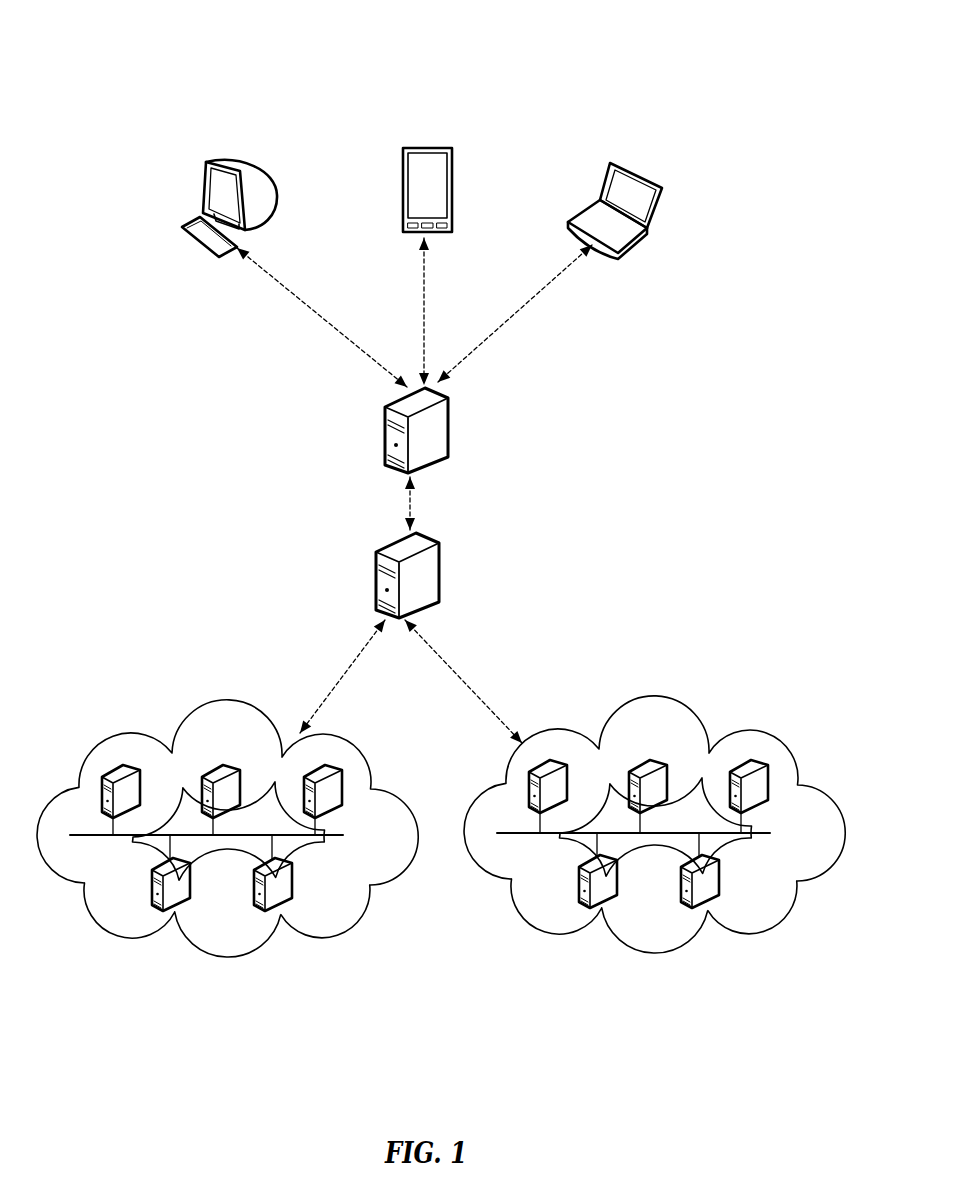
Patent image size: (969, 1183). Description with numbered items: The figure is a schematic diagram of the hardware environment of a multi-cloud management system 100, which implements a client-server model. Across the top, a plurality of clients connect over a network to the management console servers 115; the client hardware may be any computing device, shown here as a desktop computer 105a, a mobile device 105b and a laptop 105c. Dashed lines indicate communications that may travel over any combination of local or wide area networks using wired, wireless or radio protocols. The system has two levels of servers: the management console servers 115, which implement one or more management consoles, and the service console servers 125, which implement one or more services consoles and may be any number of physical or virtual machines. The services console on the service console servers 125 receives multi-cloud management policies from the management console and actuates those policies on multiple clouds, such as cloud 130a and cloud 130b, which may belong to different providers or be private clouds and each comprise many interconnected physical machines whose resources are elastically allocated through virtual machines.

The multi-cloud management system 100 is at (845, 41).
The desktop computer 105a is at (250, 143).
The mobile device 105b is at (450, 141).
The laptop 105c is at (645, 145).
The management console servers 115 is at (652, 418).
The service console servers 125 is at (640, 553).
The cloud 130a is at (382, 1000).
The cloud 130b is at (822, 1000).